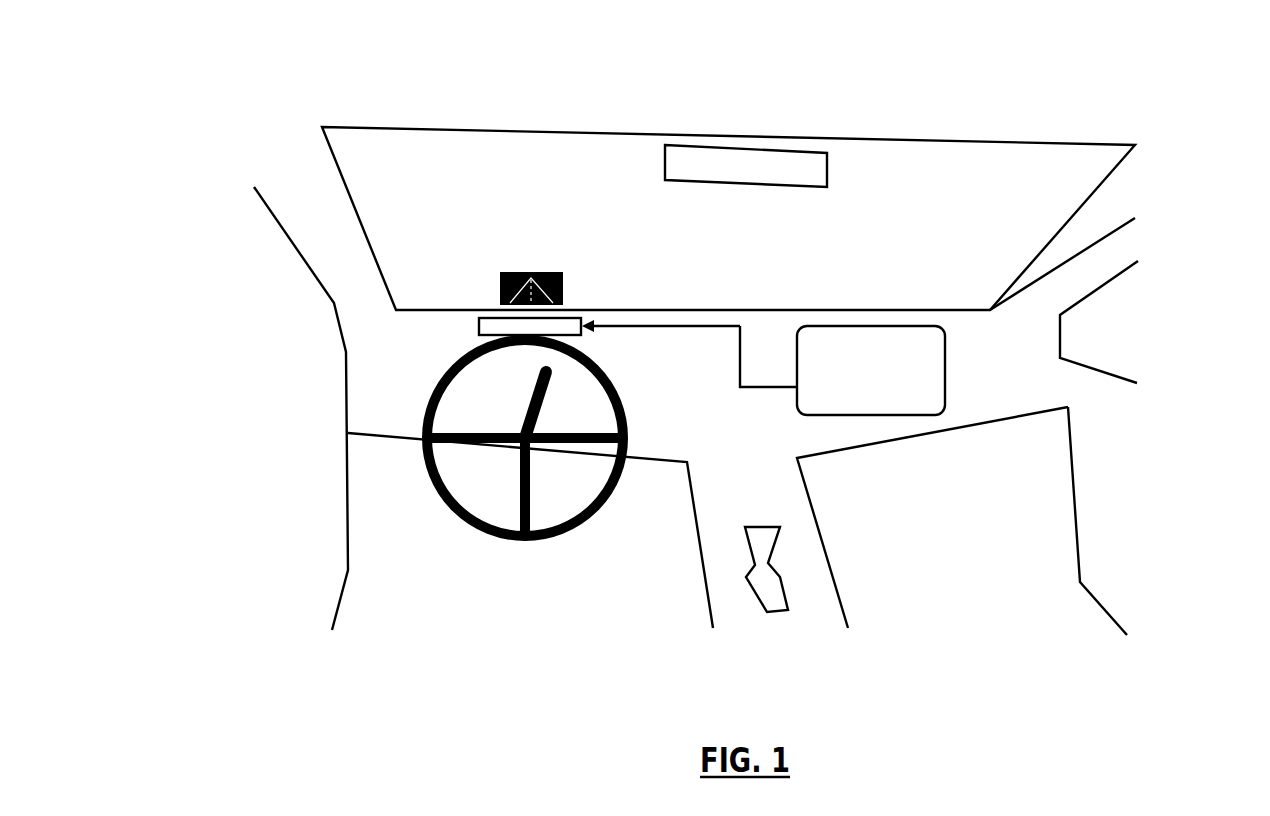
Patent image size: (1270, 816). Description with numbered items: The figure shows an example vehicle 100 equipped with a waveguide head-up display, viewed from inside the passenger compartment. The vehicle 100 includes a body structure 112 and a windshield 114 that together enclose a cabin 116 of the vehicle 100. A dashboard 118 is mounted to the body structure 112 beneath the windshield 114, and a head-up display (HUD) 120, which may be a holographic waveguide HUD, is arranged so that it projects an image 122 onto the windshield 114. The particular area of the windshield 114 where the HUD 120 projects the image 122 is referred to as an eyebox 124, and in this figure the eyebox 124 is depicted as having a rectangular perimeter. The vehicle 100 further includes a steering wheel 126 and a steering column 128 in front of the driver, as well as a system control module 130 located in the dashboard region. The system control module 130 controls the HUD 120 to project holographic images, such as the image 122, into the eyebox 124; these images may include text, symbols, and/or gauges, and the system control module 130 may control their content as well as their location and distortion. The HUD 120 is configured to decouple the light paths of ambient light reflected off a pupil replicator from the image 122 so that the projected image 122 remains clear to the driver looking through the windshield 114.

The vehicle 100 is at (175, 63).
The body structure 112 is at (302, 203).
The windshield 114 is at (356, 175).
The cabin 116 is at (1082, 280).
The dashboard 118 is at (397, 385).
The head-up display (HUD) 120 is at (479, 326).
The image 122 is at (563, 281).
The eyebox 124 is at (560, 256).
The steering wheel 126 is at (598, 370).
The steering column 128 is at (543, 408).
The system control module 130 is at (945, 370).